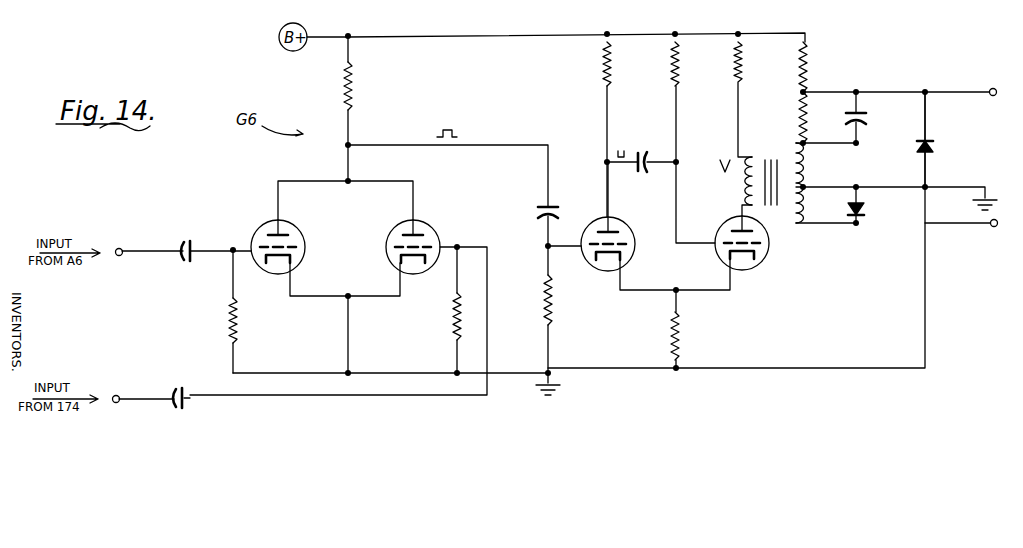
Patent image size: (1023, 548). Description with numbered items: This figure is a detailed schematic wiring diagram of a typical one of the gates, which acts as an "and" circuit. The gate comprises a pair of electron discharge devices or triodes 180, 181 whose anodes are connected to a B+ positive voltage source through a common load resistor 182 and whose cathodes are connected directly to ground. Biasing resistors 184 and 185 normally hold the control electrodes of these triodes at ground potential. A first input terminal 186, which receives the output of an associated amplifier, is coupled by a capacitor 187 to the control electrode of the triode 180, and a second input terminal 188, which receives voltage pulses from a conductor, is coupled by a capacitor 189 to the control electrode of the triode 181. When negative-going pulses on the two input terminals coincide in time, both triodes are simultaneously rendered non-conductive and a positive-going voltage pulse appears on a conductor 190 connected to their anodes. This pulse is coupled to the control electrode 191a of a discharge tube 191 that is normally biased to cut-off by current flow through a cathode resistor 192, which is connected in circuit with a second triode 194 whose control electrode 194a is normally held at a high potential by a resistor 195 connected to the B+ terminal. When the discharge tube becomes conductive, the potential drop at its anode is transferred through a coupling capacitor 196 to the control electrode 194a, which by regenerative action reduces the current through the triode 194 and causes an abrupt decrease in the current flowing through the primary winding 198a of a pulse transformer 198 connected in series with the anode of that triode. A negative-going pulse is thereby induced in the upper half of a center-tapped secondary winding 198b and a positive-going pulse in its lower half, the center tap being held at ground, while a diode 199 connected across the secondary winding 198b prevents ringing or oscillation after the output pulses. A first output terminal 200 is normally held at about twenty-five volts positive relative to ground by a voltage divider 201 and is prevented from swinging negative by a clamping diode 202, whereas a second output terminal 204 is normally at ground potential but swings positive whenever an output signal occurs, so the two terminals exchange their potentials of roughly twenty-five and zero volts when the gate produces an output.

The triode 180 is at (259, 236).
The triode 181 is at (428, 230).
The common load resistor 182 is at (352, 72).
The biasing resistor 184 is at (229, 318).
The biasing resistor 185 is at (450, 323).
The first input terminal 186 is at (122, 244).
The capacitor 187 is at (180, 243).
The second input terminal 188 is at (118, 394).
The capacitor 189 is at (180, 390).
The conductor 190 is at (489, 144).
The discharge tube 191 is at (589, 214).
The control electrode 191a is at (630, 258).
The cathode resistor 192 is at (668, 345).
The second triode 194 is at (748, 286).
The control electrode 194a is at (760, 258).
The resistor 195 is at (679, 76).
The coupling capacitor 196 is at (643, 151).
The pulse transformer 198 is at (800, 187).
The primary winding 198a is at (775, 140).
The center-tapped secondary winding 198b is at (822, 174).
The diode 199 is at (863, 214).
The first output terminal 200 is at (989, 89).
The voltage divider 201 is at (800, 110).
The clamping diode 202 is at (931, 146).
The second output terminal 204 is at (993, 228).